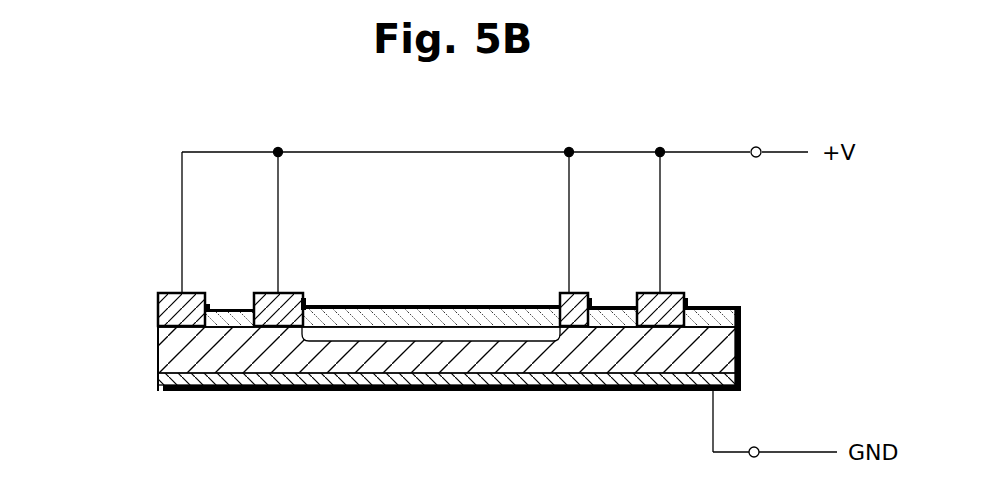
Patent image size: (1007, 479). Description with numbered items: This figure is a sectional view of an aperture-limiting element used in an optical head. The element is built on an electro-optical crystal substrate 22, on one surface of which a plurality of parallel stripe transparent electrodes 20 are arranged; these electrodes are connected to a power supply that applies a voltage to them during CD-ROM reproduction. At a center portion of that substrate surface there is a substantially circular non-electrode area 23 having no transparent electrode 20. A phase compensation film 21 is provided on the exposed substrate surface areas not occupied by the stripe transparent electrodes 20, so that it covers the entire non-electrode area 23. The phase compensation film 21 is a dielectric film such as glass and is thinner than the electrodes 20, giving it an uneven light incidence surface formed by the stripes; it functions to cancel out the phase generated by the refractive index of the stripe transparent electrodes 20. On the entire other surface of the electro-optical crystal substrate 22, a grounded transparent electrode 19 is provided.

The grounded transparent electrode 19 is at (240, 391).
The stripe transparent electrodes 20 is at (172, 308).
The phase compensation film 21 is at (227, 313).
The electro-optical crystal substrate 22 is at (647, 362).
The non-electrode area 23 is at (430, 341).